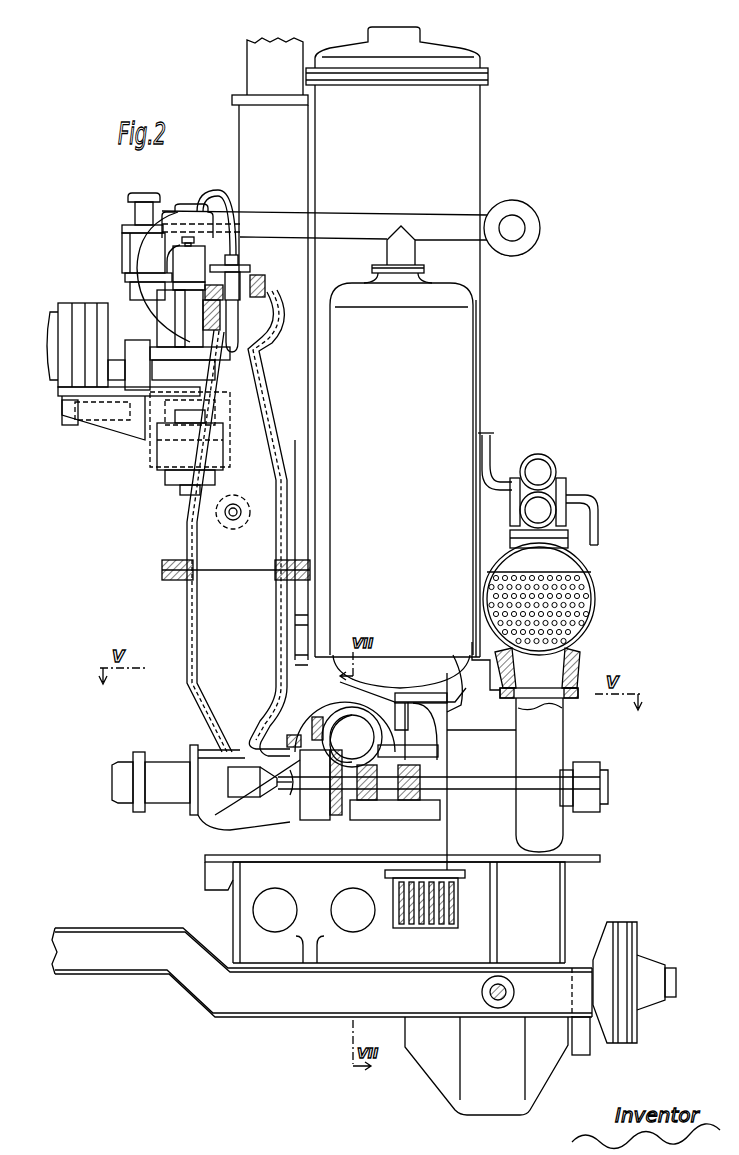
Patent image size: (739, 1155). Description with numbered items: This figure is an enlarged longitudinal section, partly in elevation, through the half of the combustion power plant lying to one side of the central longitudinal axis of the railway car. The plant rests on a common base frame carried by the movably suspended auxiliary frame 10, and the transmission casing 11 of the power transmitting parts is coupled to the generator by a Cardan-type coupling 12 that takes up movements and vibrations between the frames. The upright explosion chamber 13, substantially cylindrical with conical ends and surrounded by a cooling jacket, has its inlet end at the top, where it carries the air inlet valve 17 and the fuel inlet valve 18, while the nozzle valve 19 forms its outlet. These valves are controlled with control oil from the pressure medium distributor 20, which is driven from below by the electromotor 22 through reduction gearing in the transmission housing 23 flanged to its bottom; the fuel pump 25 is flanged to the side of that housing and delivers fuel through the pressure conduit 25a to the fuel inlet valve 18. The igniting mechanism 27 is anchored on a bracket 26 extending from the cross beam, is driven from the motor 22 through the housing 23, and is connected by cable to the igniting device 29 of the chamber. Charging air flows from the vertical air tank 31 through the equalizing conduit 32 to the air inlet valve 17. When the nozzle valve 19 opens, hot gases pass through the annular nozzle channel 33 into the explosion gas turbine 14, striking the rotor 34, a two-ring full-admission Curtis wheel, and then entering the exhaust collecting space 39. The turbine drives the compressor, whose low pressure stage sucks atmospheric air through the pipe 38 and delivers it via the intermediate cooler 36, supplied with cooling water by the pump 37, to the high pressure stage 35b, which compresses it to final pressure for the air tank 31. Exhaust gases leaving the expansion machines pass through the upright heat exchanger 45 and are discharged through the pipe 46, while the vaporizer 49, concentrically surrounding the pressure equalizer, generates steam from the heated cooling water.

The auxiliary frame 10 is at (106, 960).
The transmission casing 11 is at (543, 1068).
The coupling 12 is at (622, 930).
The explosion chamber 13 is at (206, 611).
The explosion gas turbine 14 is at (327, 745).
The air inlet valve 17 is at (194, 326).
The fuel inlet valve 18 is at (233, 309).
The nozzle valve 19 is at (243, 782).
The pressure medium distributor 20 is at (131, 261).
The electromotor 22 is at (166, 455).
The transmission housing 23 is at (190, 367).
The fuel pump 25 is at (176, 256).
The pressure conduit 25a is at (216, 192).
The bracket 26 is at (63, 401).
The igniting mechanism 27 is at (68, 306).
The igniting device 29 is at (233, 518).
The air tank 31 is at (455, 360).
The equalizing conduit 32 is at (362, 222).
The annular nozzle channel 33 is at (311, 746).
The rotor 34 is at (338, 810).
The high pressure stage compressor 35b is at (477, 742).
The intermediate cooler 36 is at (568, 570).
The pump 37 is at (521, 475).
The pipe 38 is at (430, 916).
The exhaust collecting space 39 is at (353, 735).
The heat exchanger 45 is at (251, 149).
The pipe 46 is at (256, 68).
The vaporizer 49 is at (459, 137).